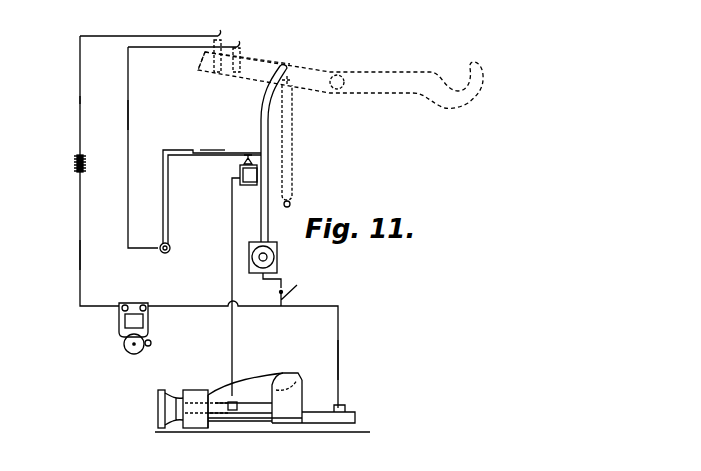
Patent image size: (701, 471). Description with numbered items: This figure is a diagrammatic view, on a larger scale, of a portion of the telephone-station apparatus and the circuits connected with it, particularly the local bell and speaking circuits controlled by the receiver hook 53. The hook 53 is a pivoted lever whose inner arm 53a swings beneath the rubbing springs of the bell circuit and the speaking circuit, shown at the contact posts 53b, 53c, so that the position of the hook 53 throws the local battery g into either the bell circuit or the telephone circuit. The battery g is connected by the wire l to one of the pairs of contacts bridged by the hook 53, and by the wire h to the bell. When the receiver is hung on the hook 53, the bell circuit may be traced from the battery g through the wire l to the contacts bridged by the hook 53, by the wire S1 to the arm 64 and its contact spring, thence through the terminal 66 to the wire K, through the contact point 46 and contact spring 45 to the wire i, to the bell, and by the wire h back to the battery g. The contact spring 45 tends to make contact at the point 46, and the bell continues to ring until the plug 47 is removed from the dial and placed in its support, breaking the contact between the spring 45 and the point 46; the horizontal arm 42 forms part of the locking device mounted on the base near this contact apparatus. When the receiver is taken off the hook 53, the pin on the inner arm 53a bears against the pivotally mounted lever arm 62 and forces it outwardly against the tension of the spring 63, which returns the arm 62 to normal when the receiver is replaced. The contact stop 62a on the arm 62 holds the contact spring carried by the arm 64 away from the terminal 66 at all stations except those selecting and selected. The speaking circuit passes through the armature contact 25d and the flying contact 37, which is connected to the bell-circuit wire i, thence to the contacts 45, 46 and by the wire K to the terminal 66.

The wire l is at (80, 100).
The wire S1 is at (129, 115).
The local battery g is at (76, 168).
The wire h is at (82, 253).
The contact post 53b is at (217, 42).
The contact post 53c is at (236, 48).
The hook 53 is at (398, 78).
The inner arm 53a is at (274, 62).
The lever arm 62 is at (262, 105).
The contact stop 62a is at (268, 152).
The upwardly projecting arm 64 is at (169, 192).
The terminal 66 is at (212, 152).
The spring 63 is at (240, 167).
The wire K is at (234, 347).
The wire i is at (338, 357).
The flying contact 37 is at (278, 286).
The armature contact 25d is at (297, 285).
The plug 47 is at (160, 405).
The horizontal arm 42 is at (255, 398).
The contact point 46 is at (237, 412).
The contact spring 45 is at (263, 418).